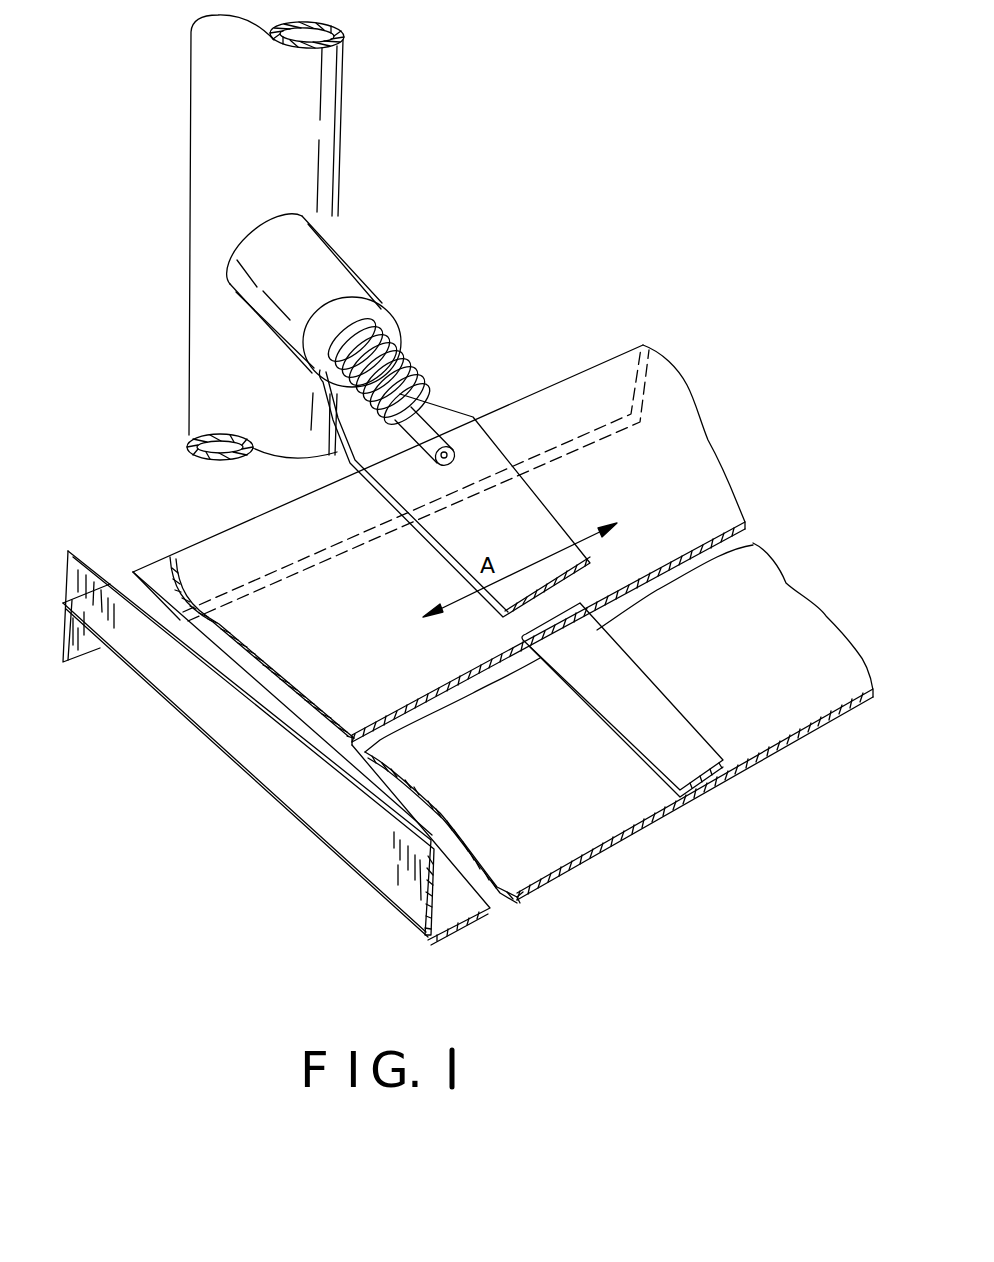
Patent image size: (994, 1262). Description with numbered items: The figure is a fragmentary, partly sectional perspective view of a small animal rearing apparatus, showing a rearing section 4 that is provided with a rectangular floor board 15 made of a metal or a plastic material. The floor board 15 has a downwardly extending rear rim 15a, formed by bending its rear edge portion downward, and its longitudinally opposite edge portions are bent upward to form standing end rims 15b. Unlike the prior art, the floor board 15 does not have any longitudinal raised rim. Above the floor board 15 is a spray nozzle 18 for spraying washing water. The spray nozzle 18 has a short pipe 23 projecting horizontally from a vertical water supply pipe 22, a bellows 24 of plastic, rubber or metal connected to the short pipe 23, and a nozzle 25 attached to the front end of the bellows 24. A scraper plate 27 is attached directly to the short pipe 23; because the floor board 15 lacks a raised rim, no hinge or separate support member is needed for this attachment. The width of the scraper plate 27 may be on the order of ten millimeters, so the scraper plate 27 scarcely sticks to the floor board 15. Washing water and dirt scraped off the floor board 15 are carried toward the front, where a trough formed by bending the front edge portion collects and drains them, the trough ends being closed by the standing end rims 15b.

The rearing section 4 is at (553, 278).
The floor board 15 is at (665, 433).
The rear rim 15a is at (650, 366).
The standing end rims 15b is at (222, 687).
The spray nozzle 18 is at (397, 297).
The water supply pipe 22 is at (313, 144).
The short pipe 23 is at (318, 263).
The bellows 24 is at (403, 357).
The nozzle 25 is at (430, 433).
The scraper plate 27 is at (530, 512).